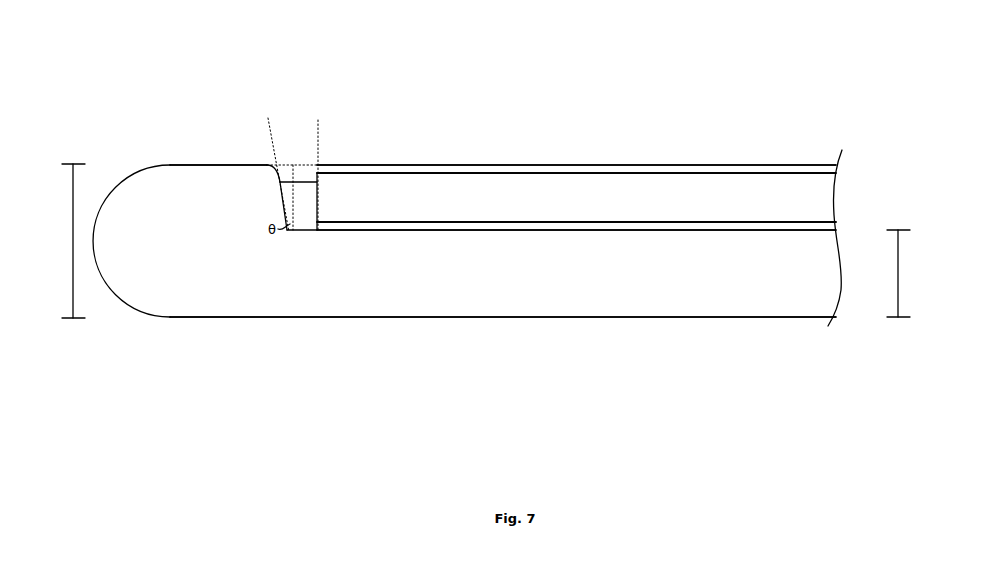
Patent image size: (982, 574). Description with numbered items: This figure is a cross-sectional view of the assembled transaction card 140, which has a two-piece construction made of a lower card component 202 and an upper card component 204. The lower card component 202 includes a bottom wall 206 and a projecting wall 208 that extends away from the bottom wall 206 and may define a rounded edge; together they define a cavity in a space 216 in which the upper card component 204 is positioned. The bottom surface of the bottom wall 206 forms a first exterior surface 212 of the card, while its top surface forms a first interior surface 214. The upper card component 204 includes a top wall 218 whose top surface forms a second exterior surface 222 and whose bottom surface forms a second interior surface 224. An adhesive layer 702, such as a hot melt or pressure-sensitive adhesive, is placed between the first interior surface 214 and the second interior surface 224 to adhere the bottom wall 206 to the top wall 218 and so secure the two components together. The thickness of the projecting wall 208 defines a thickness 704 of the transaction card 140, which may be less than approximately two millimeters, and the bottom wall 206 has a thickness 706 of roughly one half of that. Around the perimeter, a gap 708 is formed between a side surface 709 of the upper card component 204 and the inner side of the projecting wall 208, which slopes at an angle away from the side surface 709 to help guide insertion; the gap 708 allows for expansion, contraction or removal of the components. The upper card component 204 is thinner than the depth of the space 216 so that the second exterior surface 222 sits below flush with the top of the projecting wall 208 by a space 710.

The transaction card 140 is at (174, 67).
The lower card component 202 is at (178, 318).
The upper card component 204 is at (427, 185).
The bottom wall 206 is at (830, 295).
The projecting wall 208 is at (161, 182).
The first exterior surface 212 is at (575, 318).
The first interior surface 214 is at (835, 230).
The space 216 is at (283, 207).
The top wall 218 is at (813, 193).
The second exterior surface 222 is at (575, 172).
The second interior surface 224 is at (835, 220).
The adhesive layer 702 is at (580, 225).
The thickness 704 is at (72, 227).
The thickness 706 is at (912, 300).
The gap 708 is at (303, 188).
The side surface 709 is at (313, 204).
The space 710 is at (474, 167).